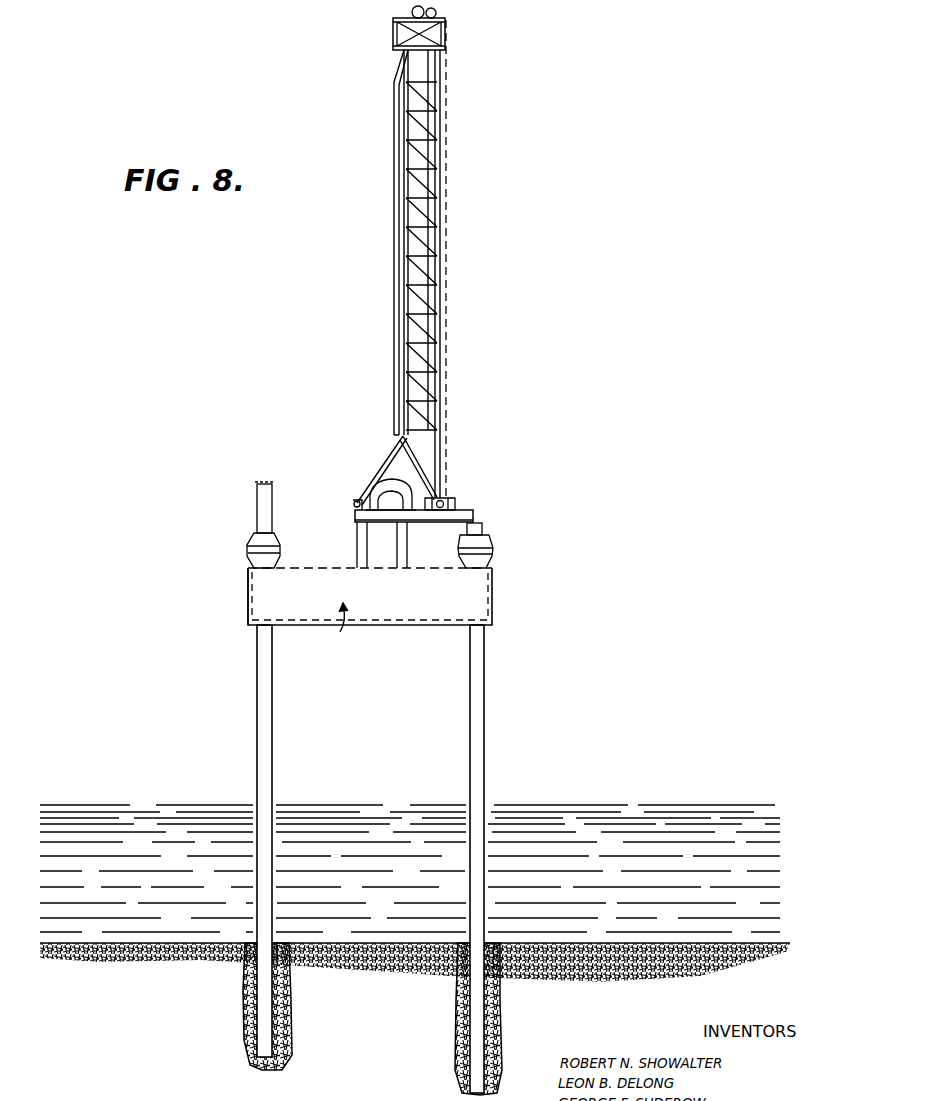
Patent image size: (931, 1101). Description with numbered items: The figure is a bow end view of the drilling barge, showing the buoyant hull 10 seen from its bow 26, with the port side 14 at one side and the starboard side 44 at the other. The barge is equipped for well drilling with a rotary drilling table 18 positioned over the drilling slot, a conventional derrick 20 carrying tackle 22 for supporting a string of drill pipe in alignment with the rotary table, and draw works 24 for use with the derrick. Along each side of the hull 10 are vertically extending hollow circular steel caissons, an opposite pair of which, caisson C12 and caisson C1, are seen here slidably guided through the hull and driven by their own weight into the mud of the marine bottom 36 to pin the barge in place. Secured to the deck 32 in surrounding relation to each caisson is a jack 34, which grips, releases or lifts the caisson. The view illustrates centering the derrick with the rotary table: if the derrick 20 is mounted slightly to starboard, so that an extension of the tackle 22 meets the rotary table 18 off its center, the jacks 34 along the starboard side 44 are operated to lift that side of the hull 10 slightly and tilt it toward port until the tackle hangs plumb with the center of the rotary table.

The buoyant hull 10 is at (330, 629).
The port side 14 is at (486, 608).
The rotary drilling table 18 is at (452, 503).
The derrick 20 is at (397, 260).
The tackle 22 is at (437, 290).
The draw works 24 is at (386, 482).
The bow 26 is at (262, 582).
The deck 32 is at (300, 568).
The jack 34 is at (271, 545).
The marine bottom 36 is at (162, 949).
The starboard side 44 is at (250, 600).
The caisson C12 is at (273, 738).
The caisson C1 is at (484, 740).